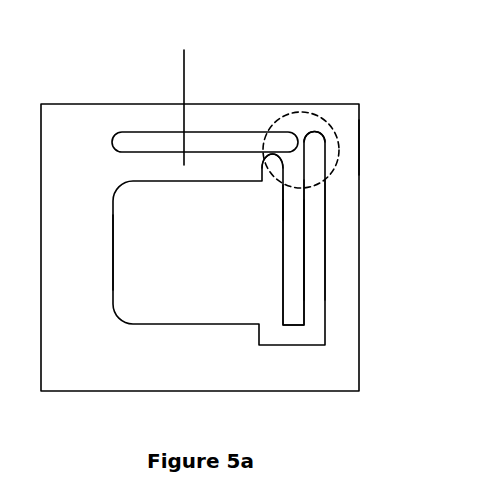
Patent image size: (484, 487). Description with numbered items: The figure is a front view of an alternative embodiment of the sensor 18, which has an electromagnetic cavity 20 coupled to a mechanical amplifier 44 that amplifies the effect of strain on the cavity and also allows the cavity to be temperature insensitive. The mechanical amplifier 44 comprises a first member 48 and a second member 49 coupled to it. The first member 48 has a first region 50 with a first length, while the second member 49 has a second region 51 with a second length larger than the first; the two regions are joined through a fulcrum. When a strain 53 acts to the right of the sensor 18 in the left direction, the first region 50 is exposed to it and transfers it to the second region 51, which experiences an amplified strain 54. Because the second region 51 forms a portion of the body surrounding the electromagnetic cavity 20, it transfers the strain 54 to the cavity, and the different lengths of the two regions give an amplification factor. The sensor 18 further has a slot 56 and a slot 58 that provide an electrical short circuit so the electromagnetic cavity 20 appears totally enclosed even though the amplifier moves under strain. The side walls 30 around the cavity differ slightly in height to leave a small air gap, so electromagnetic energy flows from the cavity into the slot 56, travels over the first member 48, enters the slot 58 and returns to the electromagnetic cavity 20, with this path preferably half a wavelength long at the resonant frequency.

The sensor 18 is at (58, 102).
The electromagnetic cavity 20 is at (212, 263).
The side walls 30 is at (180, 182).
The mechanical amplifier 44 is at (303, 112).
The first member 48 is at (292, 258).
The second member 49 is at (186, 91).
The first region 50 is at (300, 132).
The second region 51 is at (277, 152).
The strain 53 is at (368, 147).
The strain 54 is at (273, 203).
The slot 56 is at (126, 140).
The slot 58 is at (315, 220).